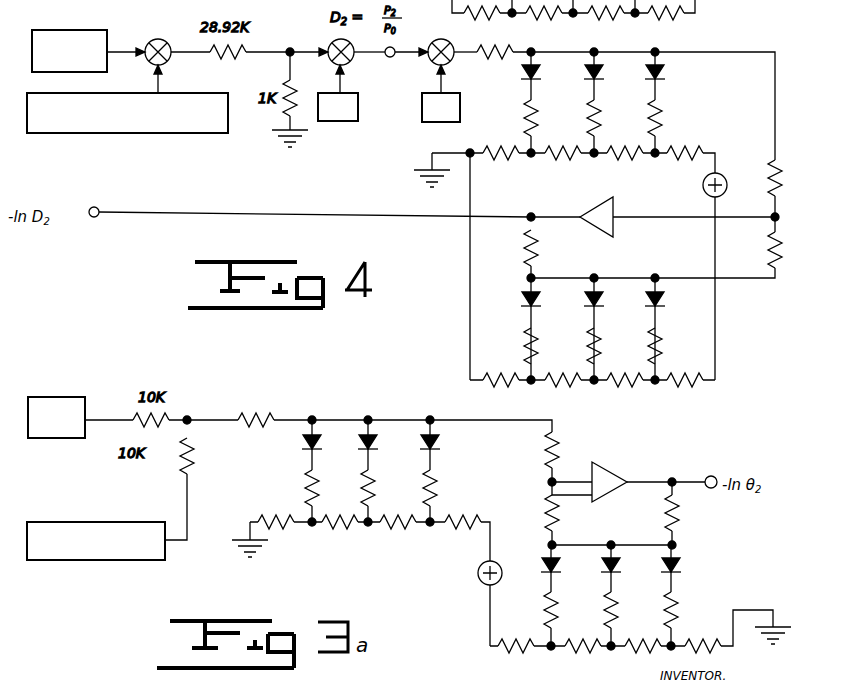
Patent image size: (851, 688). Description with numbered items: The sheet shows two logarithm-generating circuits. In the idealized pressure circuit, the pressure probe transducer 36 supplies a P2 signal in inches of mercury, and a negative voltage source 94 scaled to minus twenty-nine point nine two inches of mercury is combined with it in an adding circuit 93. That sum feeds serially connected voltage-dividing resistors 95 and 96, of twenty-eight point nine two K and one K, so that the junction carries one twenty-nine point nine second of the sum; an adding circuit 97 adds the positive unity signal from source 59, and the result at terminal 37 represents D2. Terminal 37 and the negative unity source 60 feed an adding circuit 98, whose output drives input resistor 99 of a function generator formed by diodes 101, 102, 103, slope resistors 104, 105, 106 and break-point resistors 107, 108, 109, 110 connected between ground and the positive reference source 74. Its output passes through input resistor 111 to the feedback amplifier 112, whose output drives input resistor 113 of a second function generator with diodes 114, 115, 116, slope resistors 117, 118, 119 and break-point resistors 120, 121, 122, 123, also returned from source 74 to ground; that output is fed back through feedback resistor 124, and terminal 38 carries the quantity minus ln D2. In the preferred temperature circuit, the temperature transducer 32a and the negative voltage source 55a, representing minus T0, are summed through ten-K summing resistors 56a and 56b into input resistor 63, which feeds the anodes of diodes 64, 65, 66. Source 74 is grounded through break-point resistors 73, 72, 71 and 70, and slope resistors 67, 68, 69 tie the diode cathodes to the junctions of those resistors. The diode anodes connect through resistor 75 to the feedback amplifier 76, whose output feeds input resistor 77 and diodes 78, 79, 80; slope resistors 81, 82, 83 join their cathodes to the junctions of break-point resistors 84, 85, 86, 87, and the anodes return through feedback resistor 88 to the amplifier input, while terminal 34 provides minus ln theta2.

In FIG. 4, the pressure probe transducer 36 is at (72, 30).
In FIG. 4, the adding circuit 93 is at (165, 40).
In FIG. 4, the negative voltage source 94 is at (110, 133).
In FIG. 4, the voltage-dividing resistor 95 is at (228, 60).
In FIG. 4, the voltage-dividing resistor 96 is at (282, 100).
In FIG. 4, the adding circuit 97 is at (332, 41).
In FIG. 4, the terminal 37 is at (388, 58).
In FIG. 4, the adding circuit 98 is at (447, 40).
In FIG. 4, the positive unity source 59 is at (326, 121).
In FIG. 4, the negative unity source 60 is at (428, 122).
In FIG. 4, the input resistor 99 is at (488, 60).
In FIG. 4, the break-point resistor 84 is at (482, 22).
In FIG. 3A, the break-point resistor 84 is at (726, 626).
In FIG. 4, the break-point resistor 85 is at (544, 22).
In FIG. 3A, the break-point resistor 85 is at (650, 654).
In FIG. 4, the break-point resistor 86 is at (606, 22).
In FIG. 3A, the break-point resistor 86 is at (590, 654).
In FIG. 4, the break-point resistor 87 is at (666, 22).
In FIG. 3A, the break-point resistor 87 is at (524, 654).
In FIG. 4, the diode 101 is at (542, 72).
In FIG. 4, the diode 102 is at (605, 72).
In FIG. 4, the diode 103 is at (666, 72).
In FIG. 4, the slope resistor 104 is at (524, 116).
In FIG. 4, the slope resistor 105 is at (587, 116).
In FIG. 4, the slope resistor 106 is at (662, 118).
In FIG. 4, the break-point resistor 107 is at (496, 162).
In FIG. 4, the break-point resistor 108 is at (560, 162).
In FIG. 4, the break-point resistor 109 is at (635, 162).
In FIG. 4, the break-point resistor 110 is at (683, 162).
In FIG. 4, the positive reference source 74 is at (724, 177).
In FIG. 3A, the positive reference source 74 is at (480, 582).
In FIG. 4, the input resistor 111 is at (768, 178).
In FIG. 4, the terminal 38 is at (98, 208).
In FIG. 4, the feedback amplifier 112 is at (627, 226).
In FIG. 4, the input resistor 113 is at (538, 246).
In FIG. 4, the feedback resistor 124 is at (782, 258).
In FIG. 4, the diode 114 is at (520, 300).
In FIG. 4, the diode 115 is at (583, 298).
In FIG. 4, the diode 116 is at (680, 294).
In FIG. 4, the slope resistor 117 is at (524, 344).
In FIG. 4, the slope resistor 118 is at (587, 342).
In FIG. 4, the slope resistor 119 is at (678, 336).
In FIG. 4, the break-point resistor 120 is at (497, 388).
In FIG. 4, the break-point resistor 121 is at (562, 388).
In FIG. 4, the break-point resistor 122 is at (631, 388).
In FIG. 4, the break-point resistor 123 is at (691, 388).
In FIG. 3A, the temperature transducer 32a is at (62, 397).
In FIG. 3A, the summing resistor 56a is at (150, 428).
In FIG. 3A, the summing resistor 56b is at (194, 452).
In FIG. 3A, the negative voltage source 55a is at (63, 560).
In FIG. 3A, the input resistor 63 is at (246, 412).
In FIG. 3A, the diode 64 is at (303, 442).
In FIG. 3A, the diode 65 is at (358, 436).
In FIG. 3A, the diode 66 is at (440, 442).
In FIG. 3A, the slope resistor 67 is at (335, 482).
In FIG. 3A, the slope resistor 68 is at (393, 482).
In FIG. 3A, the slope resistor 69 is at (437, 484).
In FIG. 3A, the break-point resistor 70 is at (286, 530).
In FIG. 3A, the break-point resistor 71 is at (340, 530).
In FIG. 3A, the break-point resistor 72 is at (400, 530).
In FIG. 3A, the break-point resistor 73 is at (466, 530).
In FIG. 3A, the resistor 75 is at (545, 455).
In FIG. 3A, the feedback amplifier 76 is at (615, 470).
In FIG. 3A, the input resistor 77 is at (665, 516).
In FIG. 3A, the diode 78 is at (681, 564).
In FIG. 3A, the diode 79 is at (637, 556).
In FIG. 3A, the diode 80 is at (575, 558).
In FIG. 3A, the slope resistor 81 is at (678, 604).
In FIG. 3A, the slope resistor 82 is at (634, 600).
In FIG. 3A, the slope resistor 83 is at (574, 600).
In FIG. 3A, the feedback resistor 88 is at (559, 512).
In FIG. 3A, the terminal 34 is at (706, 490).